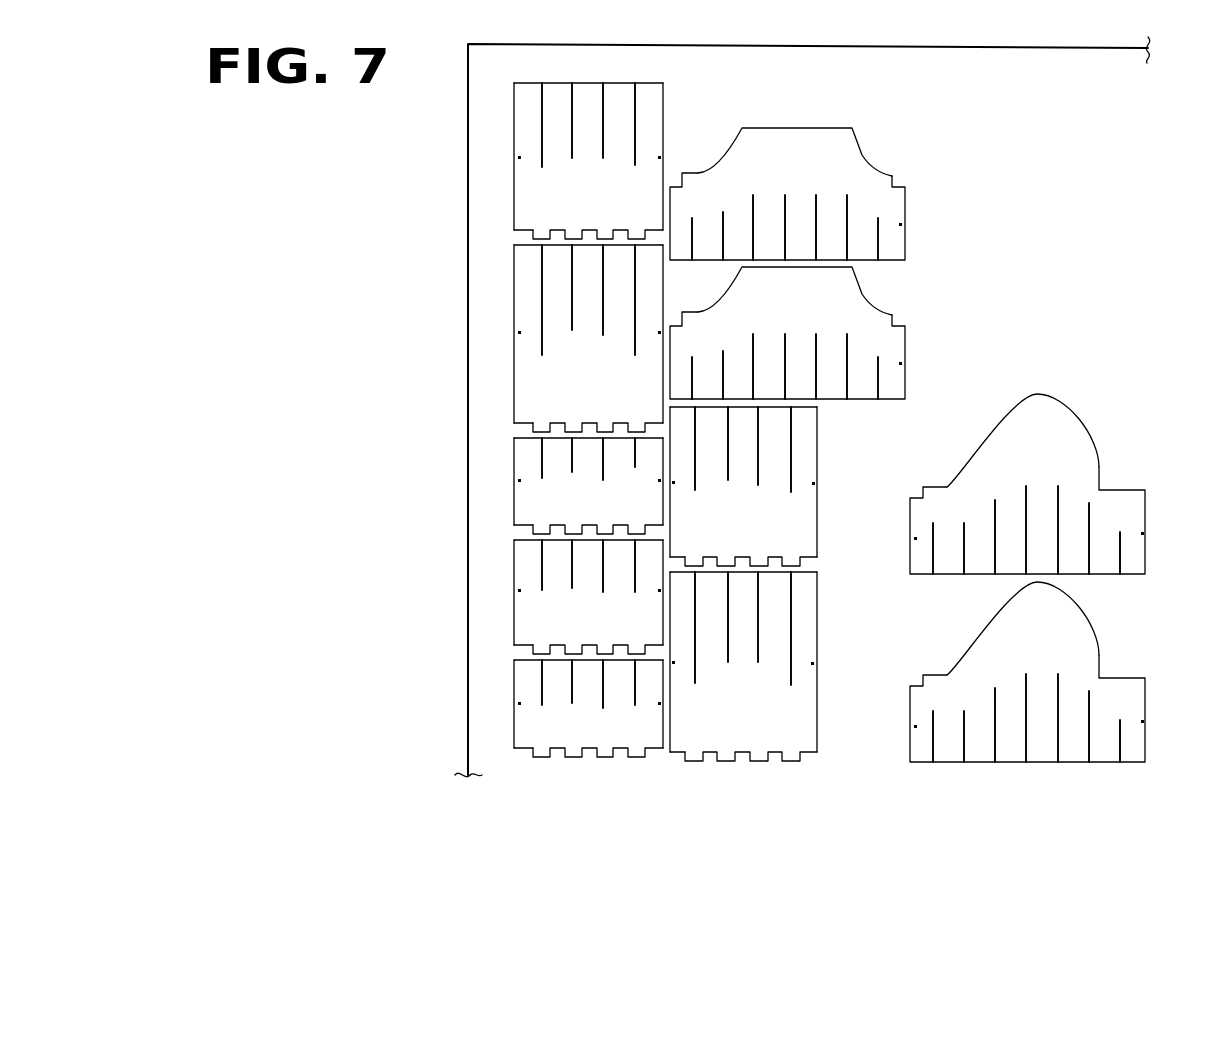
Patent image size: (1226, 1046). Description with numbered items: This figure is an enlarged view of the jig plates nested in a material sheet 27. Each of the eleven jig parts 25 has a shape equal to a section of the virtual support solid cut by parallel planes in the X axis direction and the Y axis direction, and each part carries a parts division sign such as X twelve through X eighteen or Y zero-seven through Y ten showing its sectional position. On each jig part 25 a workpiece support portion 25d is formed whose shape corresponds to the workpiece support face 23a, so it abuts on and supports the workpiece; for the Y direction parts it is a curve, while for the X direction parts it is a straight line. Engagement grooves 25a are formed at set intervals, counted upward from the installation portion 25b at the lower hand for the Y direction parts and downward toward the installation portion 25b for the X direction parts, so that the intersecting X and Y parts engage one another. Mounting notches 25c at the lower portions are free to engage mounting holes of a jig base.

The jig parts 25 is at (520, 718).
The engagement groove 25a is at (572, 685).
The installation portion 25b is at (522, 748).
The mounting notch 25c is at (633, 758).
The workpiece support portion 25d is at (865, 439).
The workpiece support face 23a is at (593, 665).
The material sheet 27 is at (1108, 216).